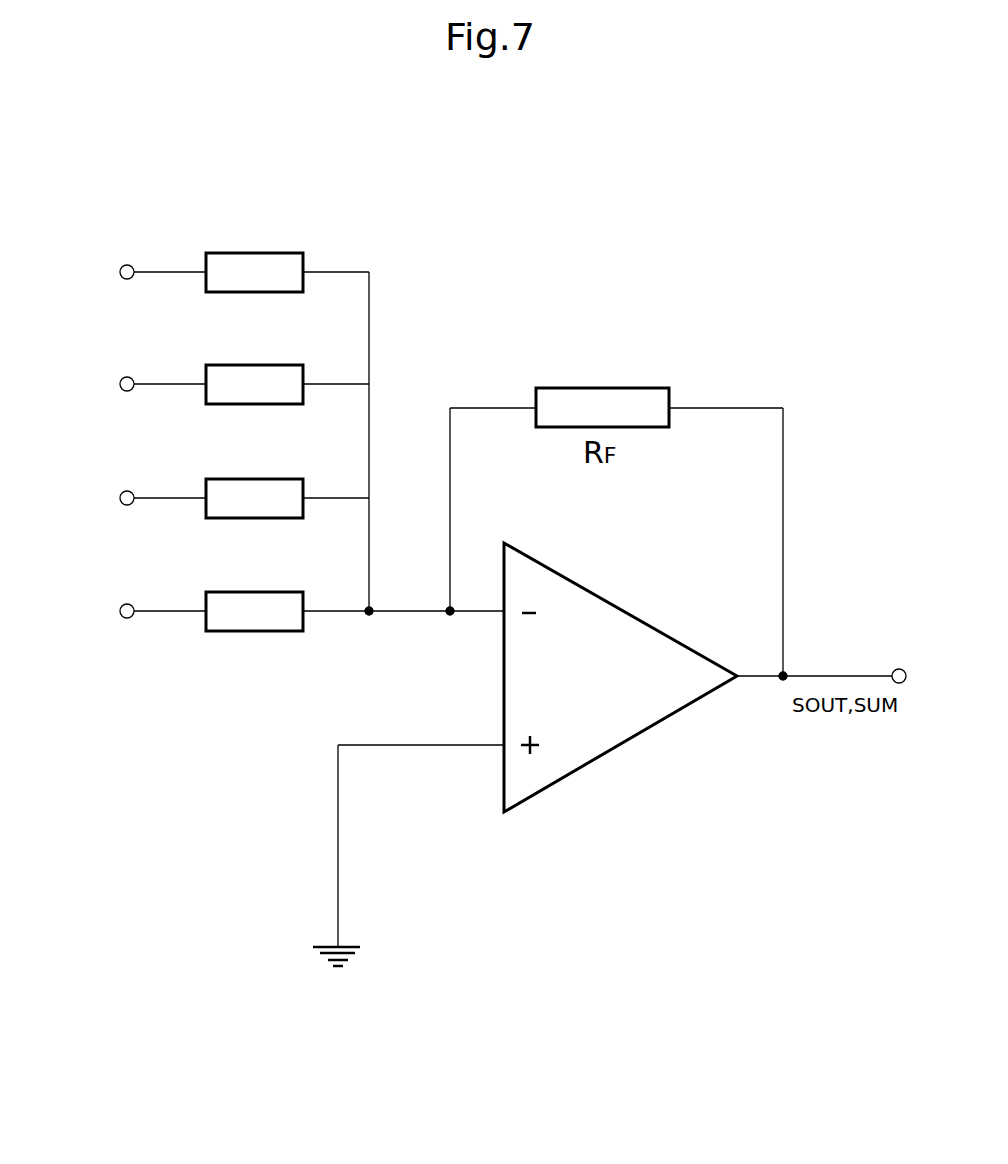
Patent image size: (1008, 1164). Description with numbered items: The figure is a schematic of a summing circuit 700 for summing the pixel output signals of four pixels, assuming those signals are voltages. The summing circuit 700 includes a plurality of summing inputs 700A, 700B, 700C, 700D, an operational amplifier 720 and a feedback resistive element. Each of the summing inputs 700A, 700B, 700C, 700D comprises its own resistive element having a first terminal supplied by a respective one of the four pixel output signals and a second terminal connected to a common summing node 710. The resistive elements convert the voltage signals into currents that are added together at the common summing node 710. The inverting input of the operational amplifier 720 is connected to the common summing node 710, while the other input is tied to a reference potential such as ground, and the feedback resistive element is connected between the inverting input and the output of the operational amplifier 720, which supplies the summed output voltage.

The summing circuit 700 is at (668, 312).
The summing input 700A is at (212, 261).
The summing input 700B is at (212, 373).
The summing input 700C is at (212, 487).
The summing input 700D is at (212, 600).
The common summing node 710 is at (405, 611).
The operational amplifier 720 is at (633, 713).